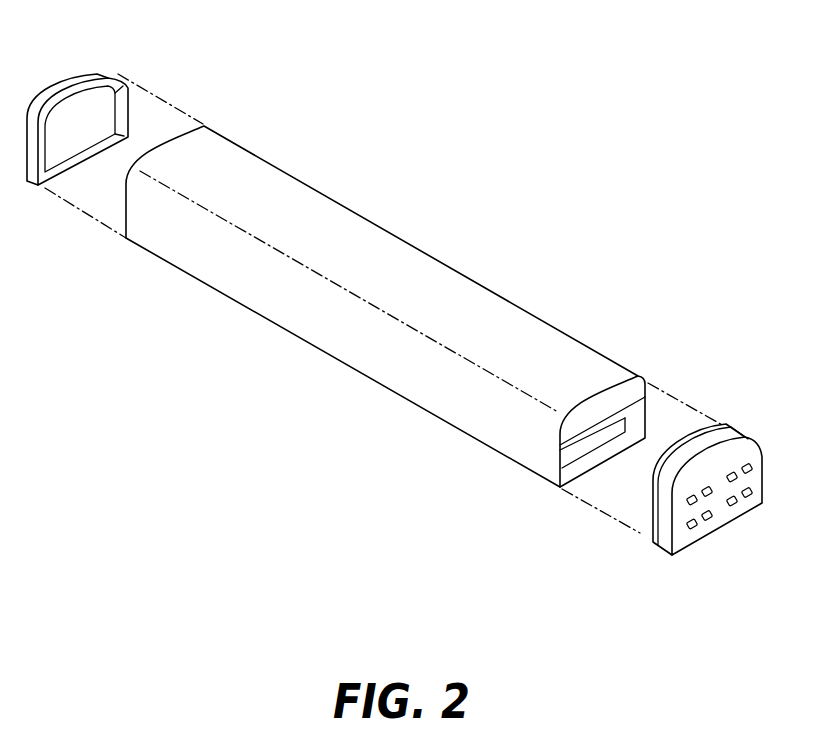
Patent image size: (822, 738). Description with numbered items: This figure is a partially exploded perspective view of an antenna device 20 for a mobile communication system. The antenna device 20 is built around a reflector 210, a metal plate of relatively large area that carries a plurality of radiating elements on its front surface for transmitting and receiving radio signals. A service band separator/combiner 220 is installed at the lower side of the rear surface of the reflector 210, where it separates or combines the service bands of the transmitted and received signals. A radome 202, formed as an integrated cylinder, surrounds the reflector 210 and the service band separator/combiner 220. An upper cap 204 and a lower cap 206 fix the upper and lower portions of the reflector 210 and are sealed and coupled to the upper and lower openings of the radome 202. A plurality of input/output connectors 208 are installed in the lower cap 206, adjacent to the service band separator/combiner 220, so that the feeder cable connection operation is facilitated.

The antenna device 20 is at (403, 317).
The radome 202 is at (398, 247).
The upper cap 204 is at (73, 83).
The lower cap 206 is at (682, 535).
The input/output connectors 208 is at (697, 527).
The reflector 210 is at (617, 402).
The service band separator/combiner 220 is at (558, 458).